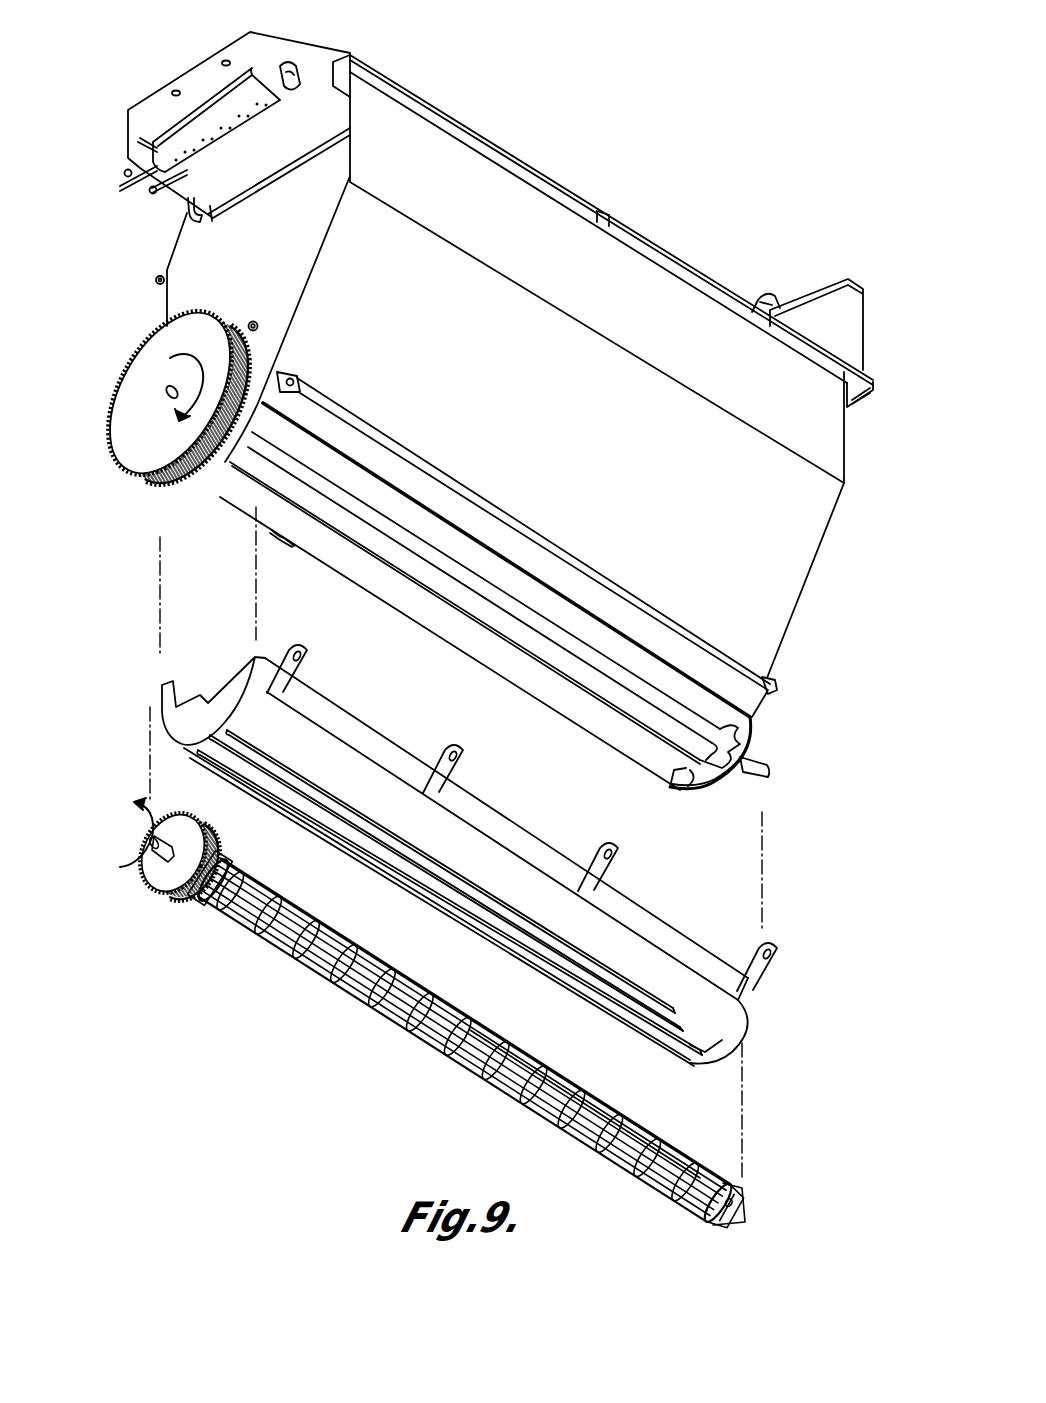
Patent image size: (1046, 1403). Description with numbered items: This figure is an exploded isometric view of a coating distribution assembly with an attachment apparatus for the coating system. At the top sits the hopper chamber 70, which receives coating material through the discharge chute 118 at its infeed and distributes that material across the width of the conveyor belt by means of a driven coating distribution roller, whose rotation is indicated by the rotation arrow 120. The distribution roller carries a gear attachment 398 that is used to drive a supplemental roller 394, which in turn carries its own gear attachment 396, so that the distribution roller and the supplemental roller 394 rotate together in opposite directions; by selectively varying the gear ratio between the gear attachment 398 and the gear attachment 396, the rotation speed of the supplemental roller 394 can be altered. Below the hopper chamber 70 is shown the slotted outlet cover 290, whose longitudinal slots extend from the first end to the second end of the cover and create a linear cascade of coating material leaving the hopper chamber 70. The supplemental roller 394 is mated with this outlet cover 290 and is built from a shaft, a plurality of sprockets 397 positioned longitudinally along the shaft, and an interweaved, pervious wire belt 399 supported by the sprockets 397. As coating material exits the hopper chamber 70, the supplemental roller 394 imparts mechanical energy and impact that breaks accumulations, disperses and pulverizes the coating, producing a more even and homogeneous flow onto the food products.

The hopper chamber 70 is at (787, 610).
The discharge chute 118 is at (197, 374).
The rotation arrow 120 is at (159, 826).
The outlet cover 290 is at (692, 1054).
The supplemental roller 394 is at (688, 1147).
The gear attachment 396 is at (150, 866).
The sprockets 397 is at (420, 1032).
The gear attachment 398 is at (123, 405).
The interweaved wire belt 399 is at (470, 1072).